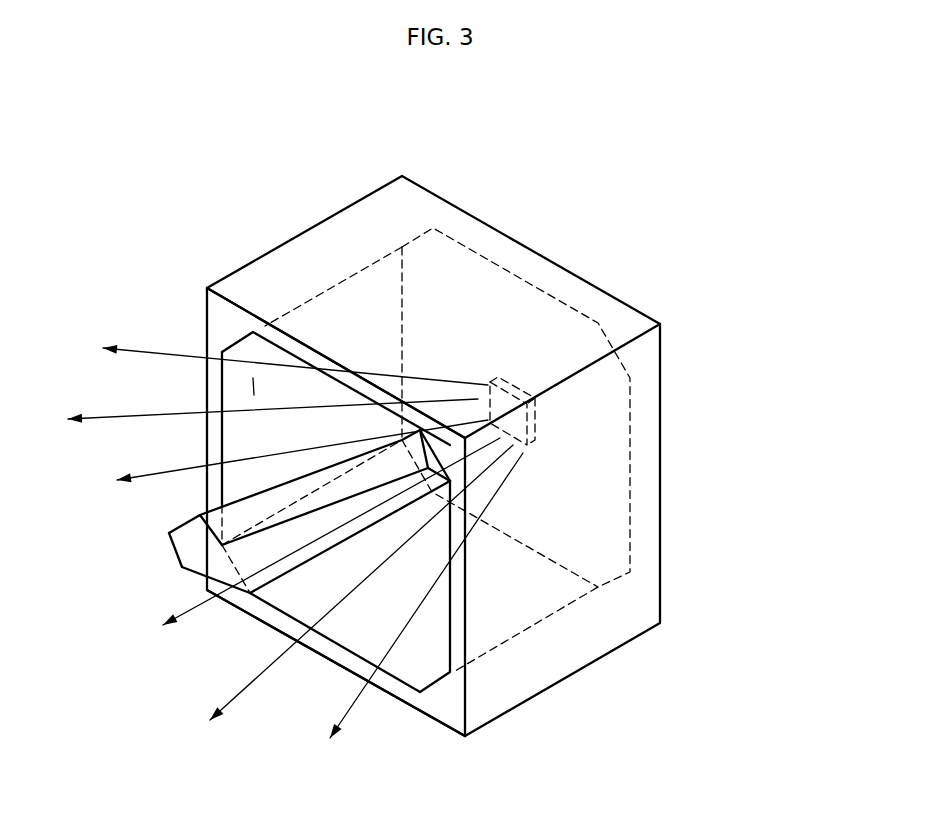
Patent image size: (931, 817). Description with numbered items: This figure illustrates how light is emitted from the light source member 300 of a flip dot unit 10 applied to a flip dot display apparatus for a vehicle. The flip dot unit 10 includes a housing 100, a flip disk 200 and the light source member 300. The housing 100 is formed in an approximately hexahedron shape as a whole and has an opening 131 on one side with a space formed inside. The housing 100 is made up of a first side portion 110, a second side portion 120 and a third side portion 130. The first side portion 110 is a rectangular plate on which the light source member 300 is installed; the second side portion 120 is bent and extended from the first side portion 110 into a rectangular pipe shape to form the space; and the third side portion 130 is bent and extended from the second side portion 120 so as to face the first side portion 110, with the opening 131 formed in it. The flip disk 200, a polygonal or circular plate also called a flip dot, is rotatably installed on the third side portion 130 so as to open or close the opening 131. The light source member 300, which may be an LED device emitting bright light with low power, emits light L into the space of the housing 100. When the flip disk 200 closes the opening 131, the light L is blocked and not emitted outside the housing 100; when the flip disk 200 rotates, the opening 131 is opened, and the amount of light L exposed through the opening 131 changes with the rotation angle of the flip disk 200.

The flip dot unit 10 is at (700, 502).
The housing 100 is at (634, 652).
The first side portion 110 is at (661, 422).
The second side portion 120 is at (318, 255).
The third side portion 130 is at (218, 320).
The opening 131 is at (250, 384).
The flip disk 200 is at (187, 546).
The light source member 300 is at (510, 383).
The light L is at (246, 688).